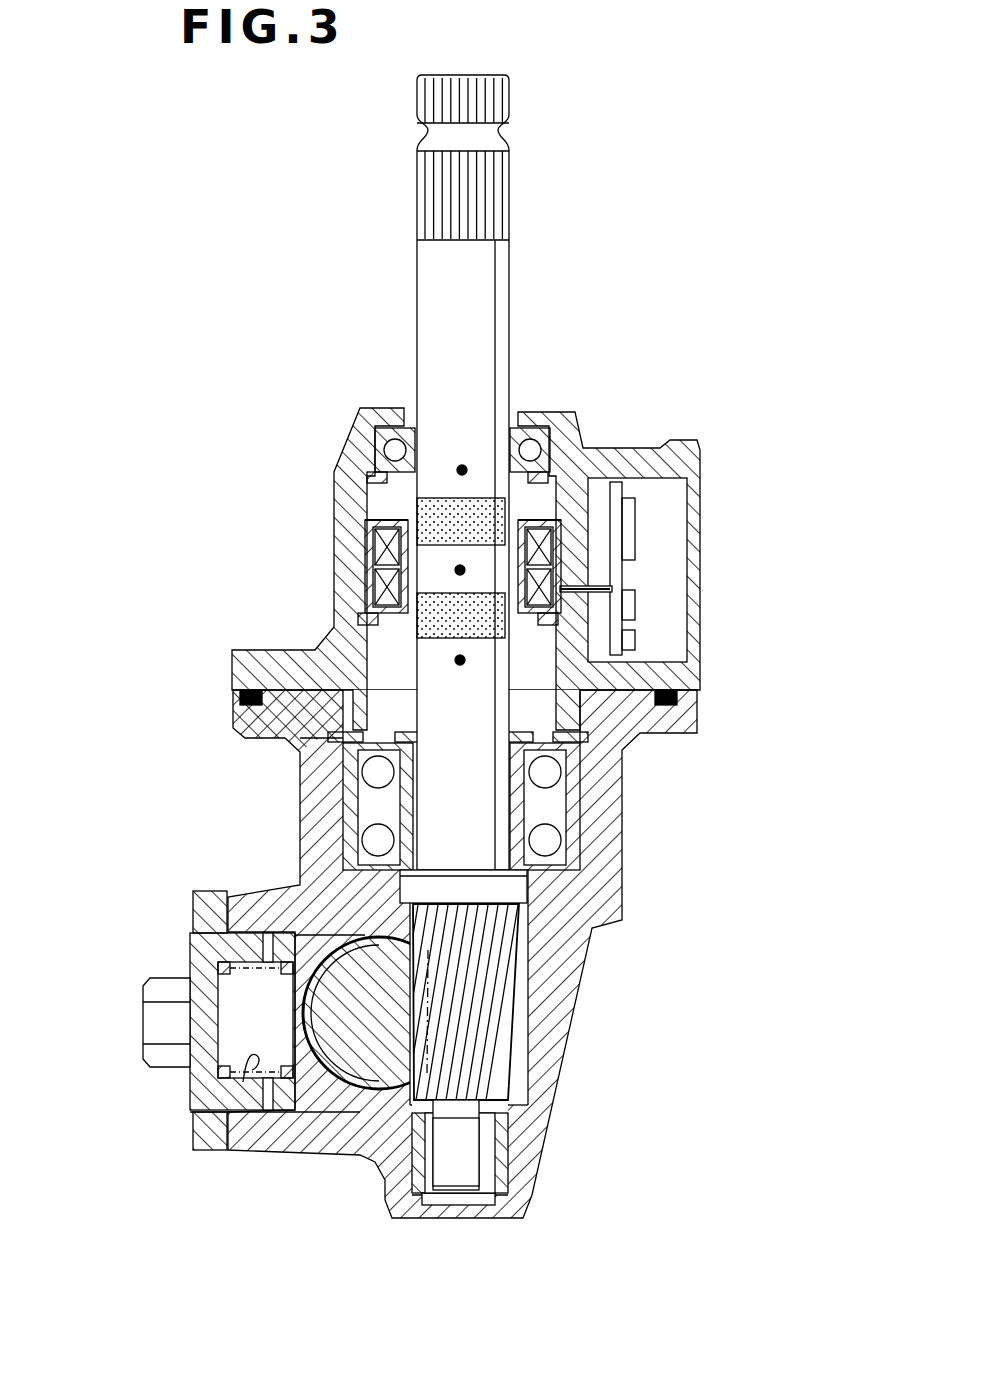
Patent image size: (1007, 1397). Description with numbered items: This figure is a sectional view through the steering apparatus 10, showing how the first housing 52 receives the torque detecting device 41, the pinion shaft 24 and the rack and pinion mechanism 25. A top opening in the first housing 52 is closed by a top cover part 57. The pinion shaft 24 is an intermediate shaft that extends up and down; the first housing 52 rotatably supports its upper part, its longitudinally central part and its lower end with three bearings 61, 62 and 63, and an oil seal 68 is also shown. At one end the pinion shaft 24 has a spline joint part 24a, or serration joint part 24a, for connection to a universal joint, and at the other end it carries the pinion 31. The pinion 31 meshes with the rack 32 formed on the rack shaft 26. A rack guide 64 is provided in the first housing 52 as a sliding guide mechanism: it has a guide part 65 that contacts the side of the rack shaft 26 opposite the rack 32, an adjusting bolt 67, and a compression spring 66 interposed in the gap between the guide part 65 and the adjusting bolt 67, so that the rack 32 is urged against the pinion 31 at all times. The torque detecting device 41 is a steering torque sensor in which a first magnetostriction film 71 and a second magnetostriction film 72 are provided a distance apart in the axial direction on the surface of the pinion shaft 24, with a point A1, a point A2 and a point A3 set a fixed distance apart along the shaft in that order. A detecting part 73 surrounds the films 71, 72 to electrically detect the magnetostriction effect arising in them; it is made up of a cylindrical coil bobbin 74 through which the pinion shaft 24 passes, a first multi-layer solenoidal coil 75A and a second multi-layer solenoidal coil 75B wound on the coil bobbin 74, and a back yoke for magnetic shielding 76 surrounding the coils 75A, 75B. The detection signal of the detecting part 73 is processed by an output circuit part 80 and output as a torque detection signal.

The electric power steering apparatus 10 is at (145, 197).
The pinion shaft 24 is at (529, 472).
The spline joint part 24a is at (503, 172).
The rack and pinion mechanism 25 is at (584, 985).
The rack shaft 26 is at (365, 1160).
The pinion 31 is at (470, 978).
The rack 32 is at (430, 1027).
The torque detecting device 41 is at (395, 500).
The first housing 52 is at (315, 820).
The top cover part 57 is at (350, 445).
The bearing 61 is at (575, 432).
The bearing 62 is at (560, 810).
The bearing 63 is at (485, 1148).
The rack guide 64 is at (161, 1089).
The guide part 65 is at (312, 1085).
The compression spring 66 is at (243, 1082).
The adjusting bolt 67 is at (185, 1083).
The oil seal 68 is at (528, 428).
The first magnetostriction film 71 is at (498, 508).
The second magnetostriction film 72 is at (505, 608).
The detecting part 73 is at (317, 526).
The coil bobbin 74 is at (368, 545).
The first multi-layer solenoidal coil 75A is at (378, 552).
The second multi-layer solenoidal coil 75B is at (378, 590).
The back yoke for magnetic shielding 76 is at (368, 612).
The output circuit part 80 is at (636, 478).
The point A1 is at (462, 470).
The point A2 is at (460, 570).
The point A3 is at (460, 660).